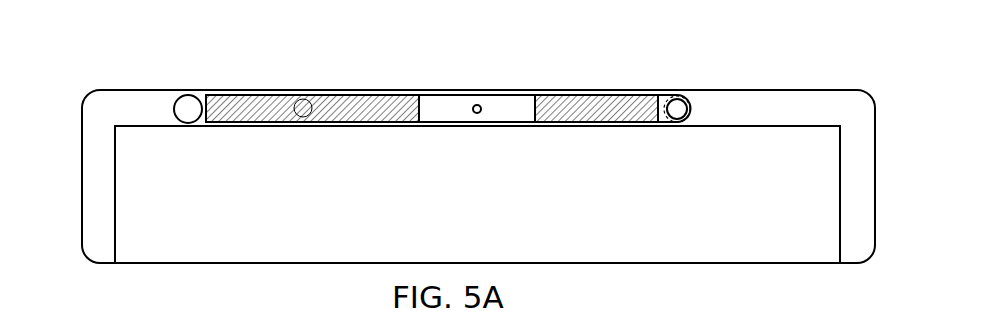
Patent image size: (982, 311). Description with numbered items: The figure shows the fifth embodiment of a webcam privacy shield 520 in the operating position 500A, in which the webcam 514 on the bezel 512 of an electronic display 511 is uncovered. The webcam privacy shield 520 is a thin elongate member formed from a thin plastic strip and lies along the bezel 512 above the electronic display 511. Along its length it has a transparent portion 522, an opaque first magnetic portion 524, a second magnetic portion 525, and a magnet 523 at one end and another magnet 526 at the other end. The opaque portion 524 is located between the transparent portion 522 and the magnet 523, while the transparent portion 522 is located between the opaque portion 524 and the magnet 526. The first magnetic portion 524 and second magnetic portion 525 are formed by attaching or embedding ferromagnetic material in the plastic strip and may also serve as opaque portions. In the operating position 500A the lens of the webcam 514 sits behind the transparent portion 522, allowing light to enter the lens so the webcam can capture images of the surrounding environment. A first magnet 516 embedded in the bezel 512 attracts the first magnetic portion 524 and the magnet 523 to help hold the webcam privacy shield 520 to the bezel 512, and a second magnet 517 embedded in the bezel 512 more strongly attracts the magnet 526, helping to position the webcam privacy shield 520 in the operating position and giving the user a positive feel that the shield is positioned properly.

The operating position 500A is at (813, 87).
The electronic display 511 is at (184, 233).
The bezel 512 is at (82, 110).
The webcam 514 is at (476, 105).
The first magnet 516 is at (292, 89).
The second magnet 517 is at (663, 90).
The webcam privacy shield 520 is at (200, 94).
The transparent portion 522 is at (517, 100).
The magnet 523 is at (180, 107).
The first magnetic portion 524 is at (335, 95).
The second magnetic portion 525 is at (588, 95).
The magnet 526 is at (689, 96).